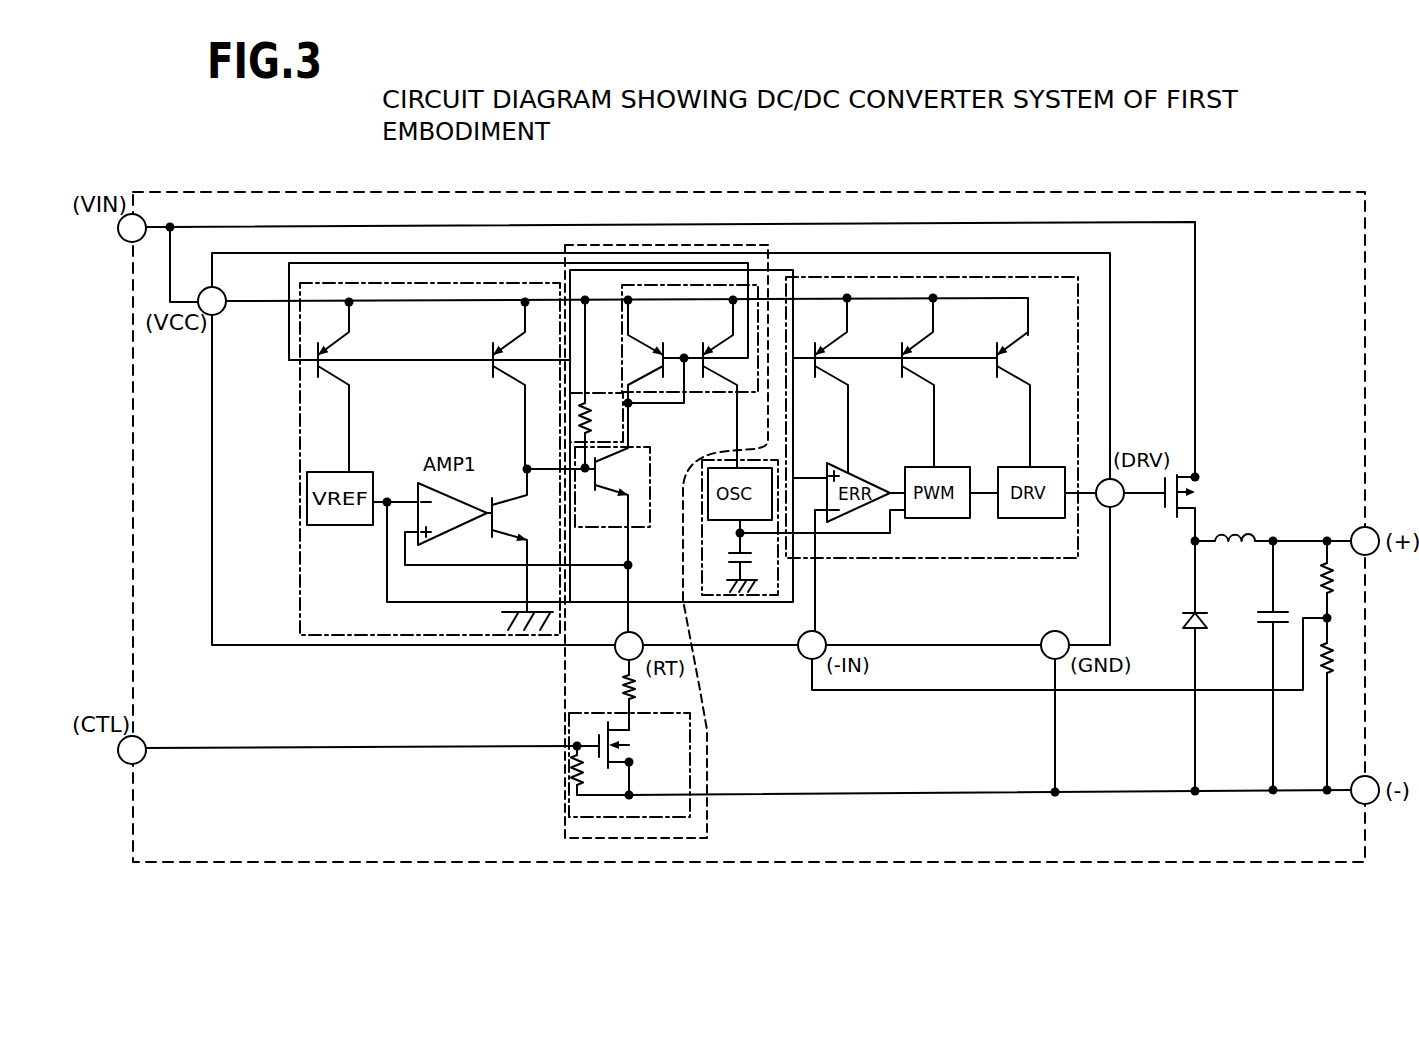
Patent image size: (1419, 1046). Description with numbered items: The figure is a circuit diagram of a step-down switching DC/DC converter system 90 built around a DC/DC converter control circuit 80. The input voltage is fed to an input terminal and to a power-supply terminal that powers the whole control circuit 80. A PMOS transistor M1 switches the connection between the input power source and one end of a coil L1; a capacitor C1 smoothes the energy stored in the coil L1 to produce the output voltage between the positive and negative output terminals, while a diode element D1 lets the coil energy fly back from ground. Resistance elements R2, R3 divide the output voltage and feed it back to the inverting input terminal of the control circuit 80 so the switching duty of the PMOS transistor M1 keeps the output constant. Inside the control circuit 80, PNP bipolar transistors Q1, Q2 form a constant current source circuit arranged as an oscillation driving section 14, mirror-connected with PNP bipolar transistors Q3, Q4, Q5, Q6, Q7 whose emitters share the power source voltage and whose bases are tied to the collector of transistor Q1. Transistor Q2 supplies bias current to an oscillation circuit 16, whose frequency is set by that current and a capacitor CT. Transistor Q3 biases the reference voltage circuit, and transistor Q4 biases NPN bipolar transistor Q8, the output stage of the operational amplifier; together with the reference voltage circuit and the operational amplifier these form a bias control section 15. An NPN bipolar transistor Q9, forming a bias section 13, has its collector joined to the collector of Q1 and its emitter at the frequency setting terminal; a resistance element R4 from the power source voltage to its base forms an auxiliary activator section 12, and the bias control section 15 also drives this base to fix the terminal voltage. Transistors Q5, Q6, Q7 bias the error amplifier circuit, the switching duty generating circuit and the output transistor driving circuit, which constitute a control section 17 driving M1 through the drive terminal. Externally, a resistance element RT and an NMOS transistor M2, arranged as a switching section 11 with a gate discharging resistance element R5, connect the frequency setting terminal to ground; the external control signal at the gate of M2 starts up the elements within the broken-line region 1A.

The region 1A is at (718, 240).
The switching section 11 is at (677, 712).
The auxiliary activator section 12 is at (625, 433).
The bias section 13 is at (650, 477).
The oscillation driving section 14 is at (716, 396).
The bias control section 15 is at (300, 433).
The oscillation circuit 16 is at (753, 595).
The control section 17 is at (1048, 558).
The DC/DC converter control circuit 80 is at (960, 222).
The DC/DC converter system 90 is at (1137, 192).
The PNP bipolar transistor Q1 is at (664, 352).
The PNP bipolar transistor Q2 is at (732, 382).
The PNP bipolar transistor Q3 is at (350, 385).
The PNP bipolar transistor Q4 is at (495, 384).
The PNP bipolar transistor Q5 is at (842, 384).
The PNP bipolar transistor Q6 is at (932, 381).
The PNP bipolar transistor Q7 is at (1021, 382).
The NPN bipolar transistor Q8 is at (507, 539).
The NPN bipolar transistor Q9 is at (606, 517).
The resistance element R2 is at (1342, 579).
The resistance element R3 is at (1342, 704).
The resistance element R4 is at (600, 384).
The resistance element R5 is at (578, 769).
The resistance element RT is at (613, 695).
The capacitor CT is at (730, 568).
The PMOS transistor M1 is at (1182, 485).
The NMOS transistor M2 is at (624, 761).
The coil L1 is at (1273, 523).
The diode element D1 is at (1204, 665).
The capacitor C1 is at (1280, 665).